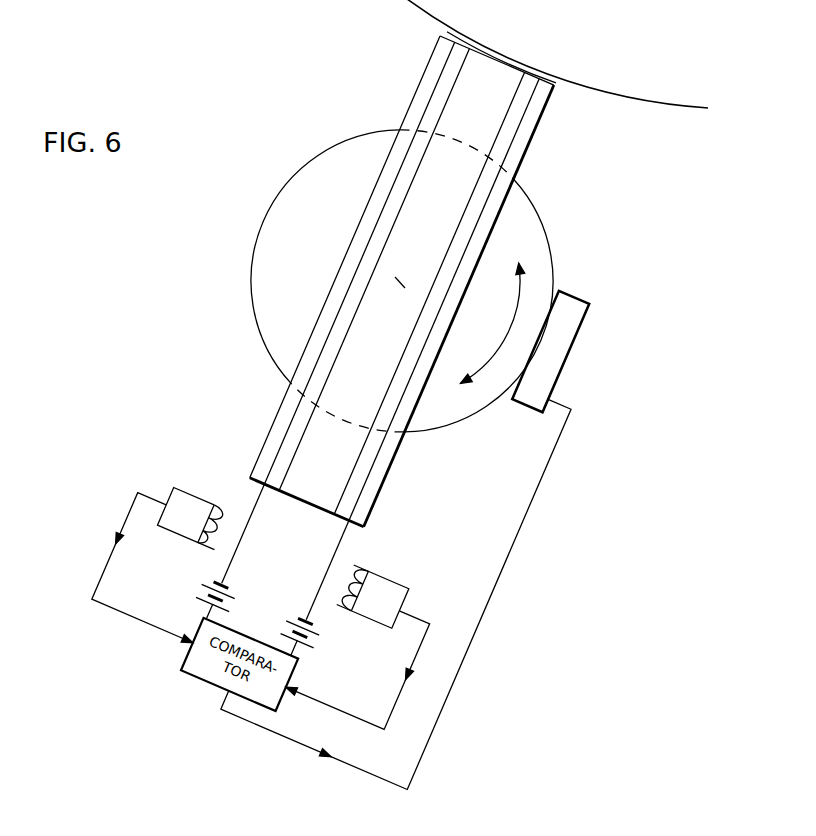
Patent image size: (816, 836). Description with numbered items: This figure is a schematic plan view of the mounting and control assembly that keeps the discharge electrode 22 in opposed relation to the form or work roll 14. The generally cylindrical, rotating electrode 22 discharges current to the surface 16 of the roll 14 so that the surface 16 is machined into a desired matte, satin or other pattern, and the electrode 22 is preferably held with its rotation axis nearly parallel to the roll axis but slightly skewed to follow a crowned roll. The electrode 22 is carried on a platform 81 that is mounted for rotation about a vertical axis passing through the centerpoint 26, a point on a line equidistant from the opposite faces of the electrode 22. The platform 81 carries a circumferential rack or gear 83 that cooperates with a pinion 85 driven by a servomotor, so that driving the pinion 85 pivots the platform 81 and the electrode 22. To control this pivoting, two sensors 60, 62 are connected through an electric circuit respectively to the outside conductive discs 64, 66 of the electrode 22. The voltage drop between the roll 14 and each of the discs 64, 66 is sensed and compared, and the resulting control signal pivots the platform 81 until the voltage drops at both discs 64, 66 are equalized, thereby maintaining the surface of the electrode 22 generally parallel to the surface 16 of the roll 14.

The roll 14 is at (638, 62).
The surface 16 is at (620, 95).
The electrode 22 is at (407, 113).
The centerpoint 26 is at (398, 282).
The sensor 60 is at (388, 583).
The sensor 62 is at (200, 497).
The outside conductive disc 64 is at (385, 455).
The outside conductive disc 66 is at (290, 407).
The platform 81 is at (518, 238).
The circumferential rack or gear 83 is at (553, 258).
The pinion 85 is at (574, 298).